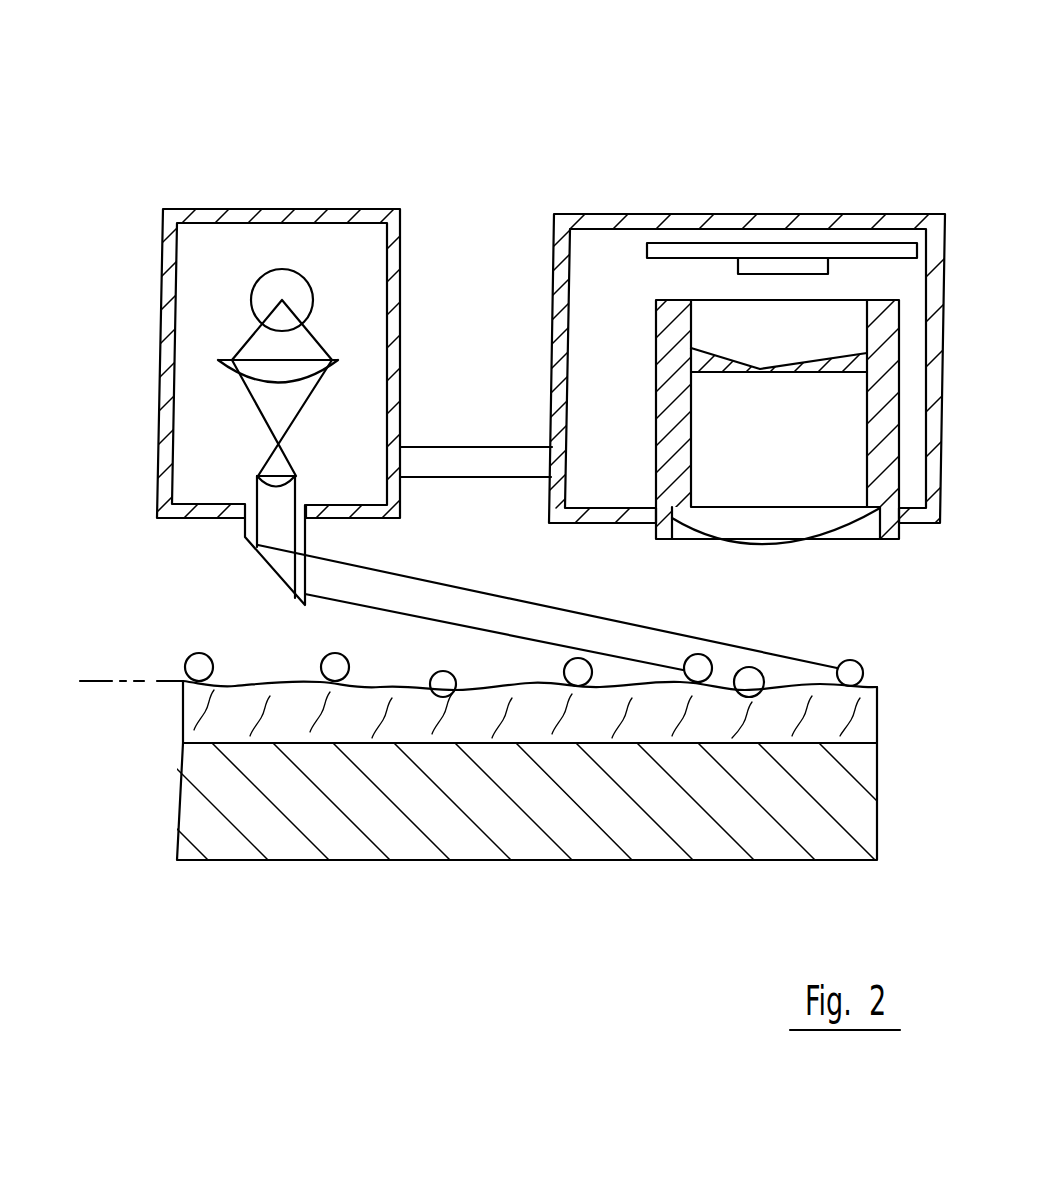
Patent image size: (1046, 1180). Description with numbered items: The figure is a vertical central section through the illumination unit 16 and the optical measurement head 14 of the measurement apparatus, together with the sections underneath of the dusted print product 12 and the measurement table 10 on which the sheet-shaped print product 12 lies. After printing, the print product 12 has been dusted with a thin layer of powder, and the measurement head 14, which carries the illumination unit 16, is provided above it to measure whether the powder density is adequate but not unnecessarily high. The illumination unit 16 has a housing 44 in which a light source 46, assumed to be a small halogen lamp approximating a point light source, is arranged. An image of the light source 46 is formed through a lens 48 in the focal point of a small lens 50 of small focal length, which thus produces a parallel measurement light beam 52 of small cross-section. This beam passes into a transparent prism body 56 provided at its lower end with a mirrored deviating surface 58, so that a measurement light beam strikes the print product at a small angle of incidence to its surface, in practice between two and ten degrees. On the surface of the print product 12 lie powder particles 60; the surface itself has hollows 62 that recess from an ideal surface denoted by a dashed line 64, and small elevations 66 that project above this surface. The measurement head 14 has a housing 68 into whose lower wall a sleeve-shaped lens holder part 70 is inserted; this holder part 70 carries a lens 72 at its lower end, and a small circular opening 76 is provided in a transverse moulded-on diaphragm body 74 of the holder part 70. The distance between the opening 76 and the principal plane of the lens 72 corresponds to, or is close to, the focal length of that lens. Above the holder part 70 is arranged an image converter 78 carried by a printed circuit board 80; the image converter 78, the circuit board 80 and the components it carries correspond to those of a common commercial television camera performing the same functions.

The measurement table 10 is at (273, 827).
The print product 12 is at (374, 727).
The optical measurement head 14 is at (768, 142).
The illumination unit 16 is at (284, 142).
The housing 44 is at (223, 210).
The light source 46 is at (288, 280).
The lens 48 is at (290, 367).
The small lens 50 is at (293, 448).
The parallel measurement light beam 52 is at (300, 497).
The transparent prism body 56 is at (300, 547).
The mirrored deviating surface 58 is at (273, 570).
The powder particles 60 is at (456, 684).
The hollows 62 is at (742, 690).
The dashed line 64 is at (125, 677).
The small elevations 66 is at (503, 688).
The housing 68 is at (597, 220).
The lens holder part 70 is at (674, 430).
The lens 72 is at (735, 520).
The diaphragm body 74 is at (840, 372).
The circular opening 76 is at (782, 372).
The image converter 78 is at (782, 262).
The printed circuit board 80 is at (885, 250).